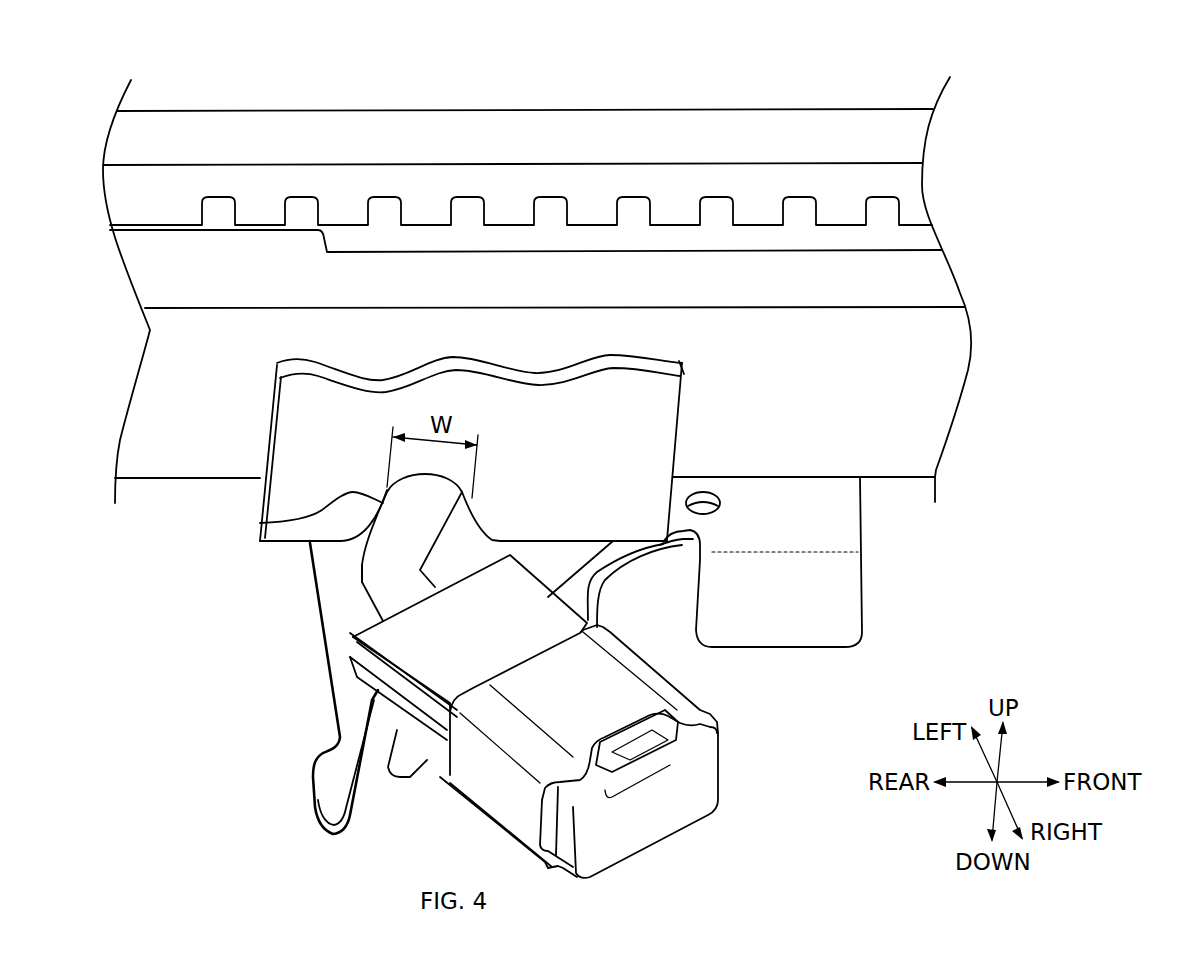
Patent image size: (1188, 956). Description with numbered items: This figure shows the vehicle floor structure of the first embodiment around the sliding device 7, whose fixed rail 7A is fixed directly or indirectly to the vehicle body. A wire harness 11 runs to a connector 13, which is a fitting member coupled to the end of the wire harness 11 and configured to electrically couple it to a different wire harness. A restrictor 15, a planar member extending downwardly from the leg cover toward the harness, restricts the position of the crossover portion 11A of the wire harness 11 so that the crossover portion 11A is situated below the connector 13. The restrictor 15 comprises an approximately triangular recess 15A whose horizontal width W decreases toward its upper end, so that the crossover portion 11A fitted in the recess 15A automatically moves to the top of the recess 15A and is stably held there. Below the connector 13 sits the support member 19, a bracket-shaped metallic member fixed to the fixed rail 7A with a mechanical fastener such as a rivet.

The sliding device 7 is at (302, 111).
The fixed rail 7A is at (888, 460).
The wire harness 11 is at (363, 579).
The crossover portion 11A is at (383, 592).
The connector 13 is at (691, 694).
The restrictor 15 is at (262, 542).
The recess 15A is at (258, 521).
The support member 19 is at (309, 787).